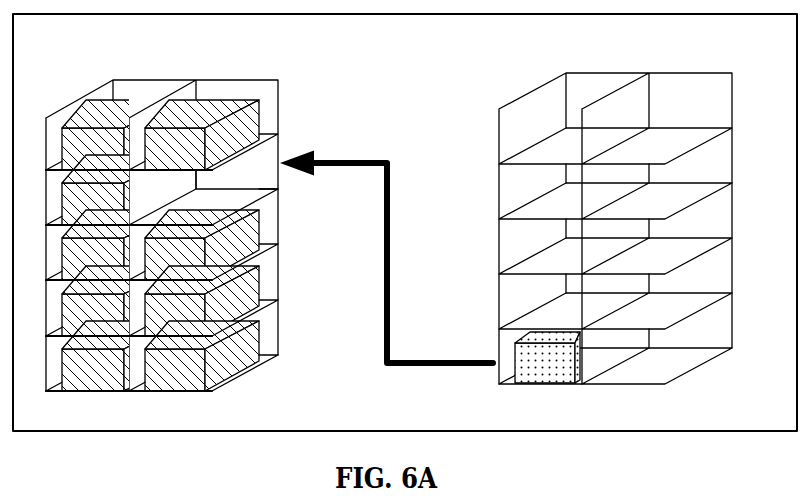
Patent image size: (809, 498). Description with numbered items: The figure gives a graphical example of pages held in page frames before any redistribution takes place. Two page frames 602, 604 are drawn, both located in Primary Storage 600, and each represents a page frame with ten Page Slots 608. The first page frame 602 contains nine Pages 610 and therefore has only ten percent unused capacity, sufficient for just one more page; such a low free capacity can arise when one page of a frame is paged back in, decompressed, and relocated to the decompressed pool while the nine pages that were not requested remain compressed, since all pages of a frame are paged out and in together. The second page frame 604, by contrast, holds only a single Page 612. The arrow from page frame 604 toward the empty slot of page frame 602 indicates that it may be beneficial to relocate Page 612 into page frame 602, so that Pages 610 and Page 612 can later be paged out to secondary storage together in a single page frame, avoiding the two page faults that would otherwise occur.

The primary storage 600 is at (113, 58).
The page frame 602 is at (194, 80).
The page frame 604 is at (637, 73).
The page slots 608 is at (240, 168).
The pages 610 is at (237, 347).
The page 612 is at (535, 362).